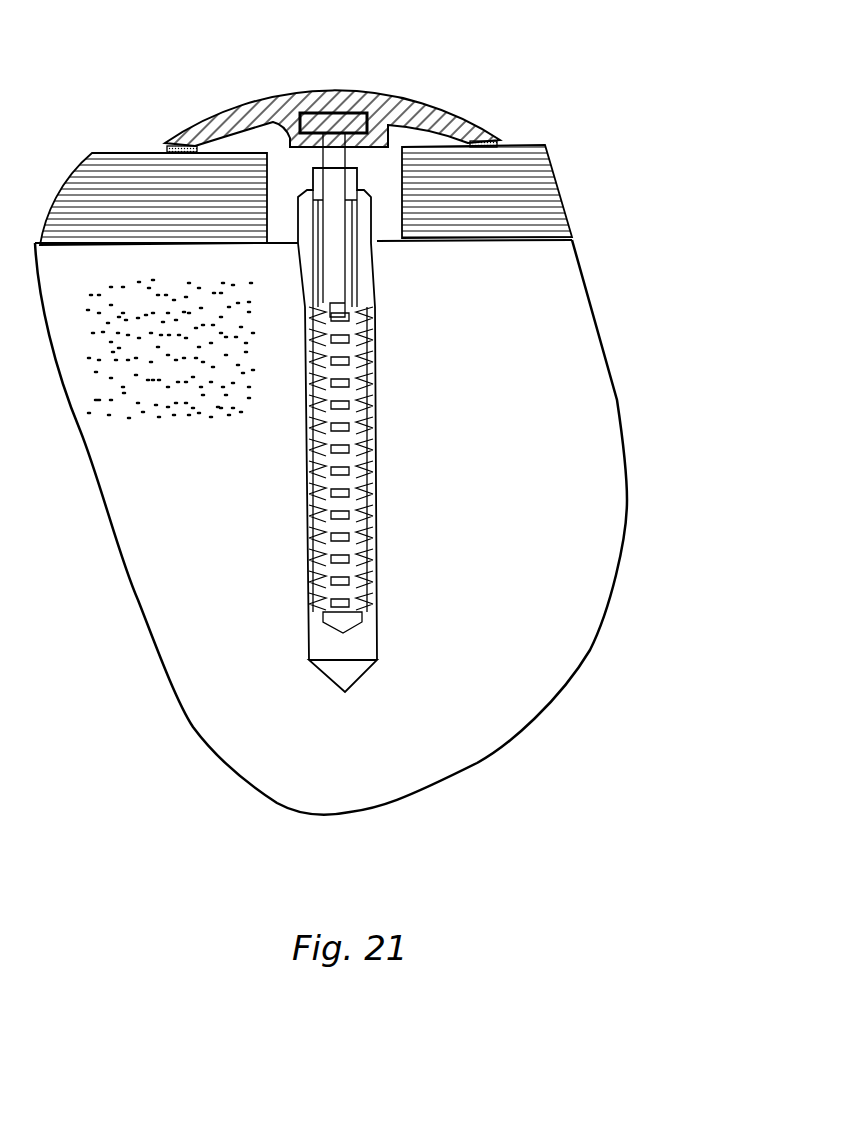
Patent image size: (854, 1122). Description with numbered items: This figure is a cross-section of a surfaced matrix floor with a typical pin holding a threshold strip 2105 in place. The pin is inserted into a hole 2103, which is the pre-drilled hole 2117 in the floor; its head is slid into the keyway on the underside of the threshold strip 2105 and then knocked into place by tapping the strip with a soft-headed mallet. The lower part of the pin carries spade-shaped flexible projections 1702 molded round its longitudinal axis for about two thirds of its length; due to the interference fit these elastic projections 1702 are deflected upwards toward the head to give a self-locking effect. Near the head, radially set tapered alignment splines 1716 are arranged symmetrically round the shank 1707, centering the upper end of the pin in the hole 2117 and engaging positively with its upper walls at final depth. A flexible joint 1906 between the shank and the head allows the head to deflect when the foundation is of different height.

The flexible joint 1906 is at (277, 125).
The hole 2103 is at (333, 128).
The threshold strip 2105 is at (448, 118).
The alignment splines 1716 is at (363, 254).
The flexible projections 1702 is at (372, 413).
The shank 1707 is at (333, 617).
The pre-drilled hole 2117 is at (368, 643).